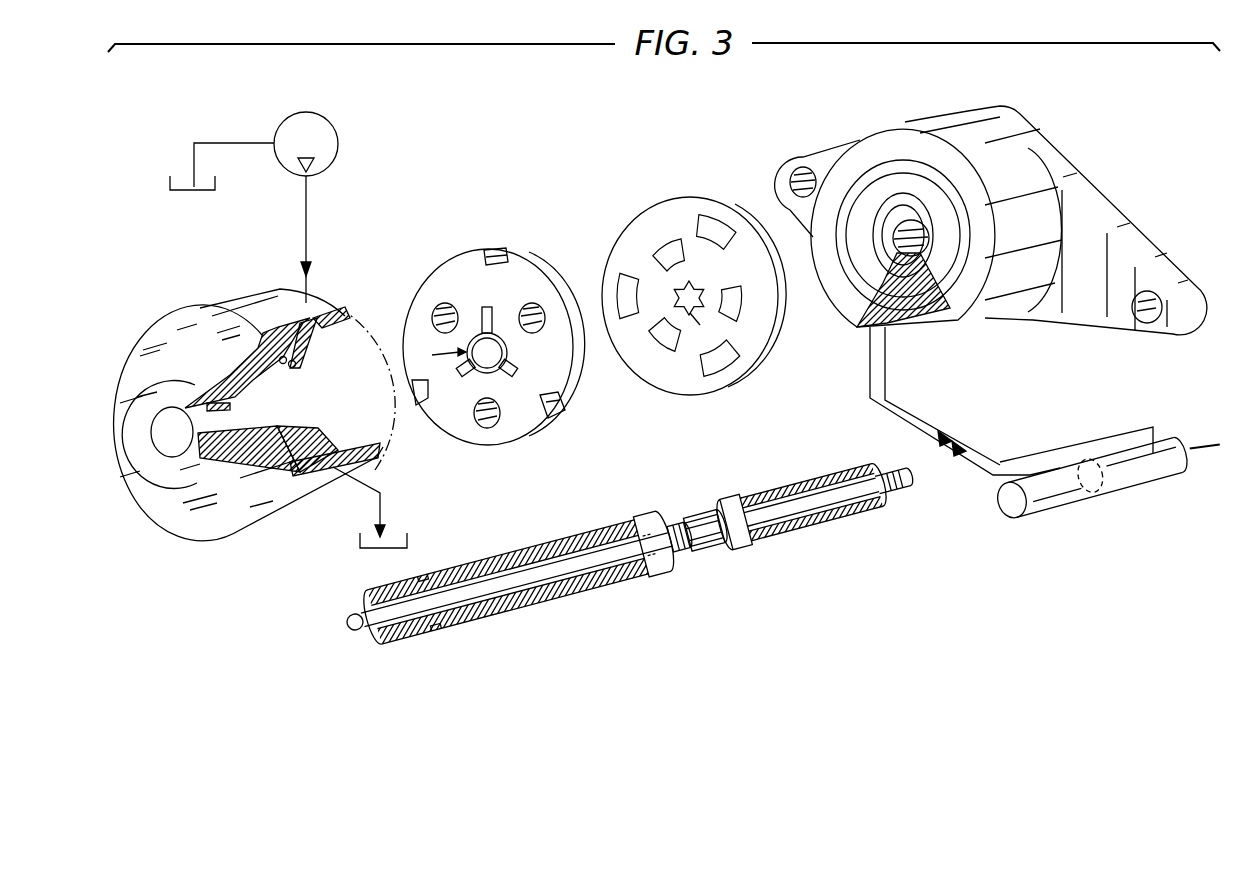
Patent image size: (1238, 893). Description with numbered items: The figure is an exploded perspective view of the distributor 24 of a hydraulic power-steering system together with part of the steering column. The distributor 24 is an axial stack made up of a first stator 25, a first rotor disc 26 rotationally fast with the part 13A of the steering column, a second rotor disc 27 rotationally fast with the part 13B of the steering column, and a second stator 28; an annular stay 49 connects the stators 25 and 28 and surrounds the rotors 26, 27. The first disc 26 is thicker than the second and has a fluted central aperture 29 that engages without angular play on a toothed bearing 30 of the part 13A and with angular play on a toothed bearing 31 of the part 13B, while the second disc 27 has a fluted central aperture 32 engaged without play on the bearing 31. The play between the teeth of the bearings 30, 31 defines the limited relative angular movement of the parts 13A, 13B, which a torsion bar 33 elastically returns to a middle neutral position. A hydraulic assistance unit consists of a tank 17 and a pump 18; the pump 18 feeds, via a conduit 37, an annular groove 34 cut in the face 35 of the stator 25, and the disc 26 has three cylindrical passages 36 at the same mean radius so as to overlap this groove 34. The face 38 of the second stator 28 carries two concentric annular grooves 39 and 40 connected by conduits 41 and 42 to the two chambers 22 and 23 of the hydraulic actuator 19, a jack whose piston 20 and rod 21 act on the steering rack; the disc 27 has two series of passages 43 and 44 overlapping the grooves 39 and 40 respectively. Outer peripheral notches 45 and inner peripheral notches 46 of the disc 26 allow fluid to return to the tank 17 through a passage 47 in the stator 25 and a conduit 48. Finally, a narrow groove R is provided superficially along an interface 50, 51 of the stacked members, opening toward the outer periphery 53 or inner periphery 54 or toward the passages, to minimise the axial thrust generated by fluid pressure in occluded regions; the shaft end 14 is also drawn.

The part of the steering column 13A is at (513, 608).
The part of the steering column 13B is at (787, 534).
The shaft end 14 is at (863, 514).
The tank 17 is at (176, 191).
The pump 18 is at (338, 118).
The hydraulic actuator 19 is at (1030, 517).
The piston 20 is at (1103, 493).
The rod 21 is at (1203, 444).
The chamber 22 is at (1057, 491).
The chamber 23 is at (1163, 473).
The distributor 24 is at (514, 238).
The first stator 25 is at (196, 305).
The first rotor disc 26 is at (448, 254).
The second rotor disc 27 is at (660, 200).
The second stator 28 is at (881, 124).
The fluted central aperture 29 is at (505, 350).
The toothed bearing 30 is at (671, 520).
The toothed bearing 31 is at (700, 508).
The fluted central aperture 32 is at (692, 288).
The torsion bar 33 is at (627, 558).
The annular groove 34 is at (312, 431).
The face 35 is at (305, 345).
The cylindrical passages 36 is at (433, 312).
The conduit 37 is at (300, 216).
The face 38 is at (841, 170).
The annular groove 39 is at (903, 160).
The annular groove 40 is at (937, 207).
The conduit 41 is at (870, 367).
The conduit 42 is at (887, 384).
The passages 43 is at (706, 226).
The passages 44 is at (647, 262).
The outer peripheral notches 45 is at (492, 250).
The inner peripheral notches 46 is at (484, 312).
The passage 47 is at (270, 452).
The conduit 48 is at (368, 470).
The annular stay 49 is at (335, 302).
The interface 50 is at (520, 427).
The interface 51 is at (683, 378).
The outer periphery 53 is at (555, 280).
The inner periphery 54 is at (694, 318).
The narrow groove R is at (439, 357).